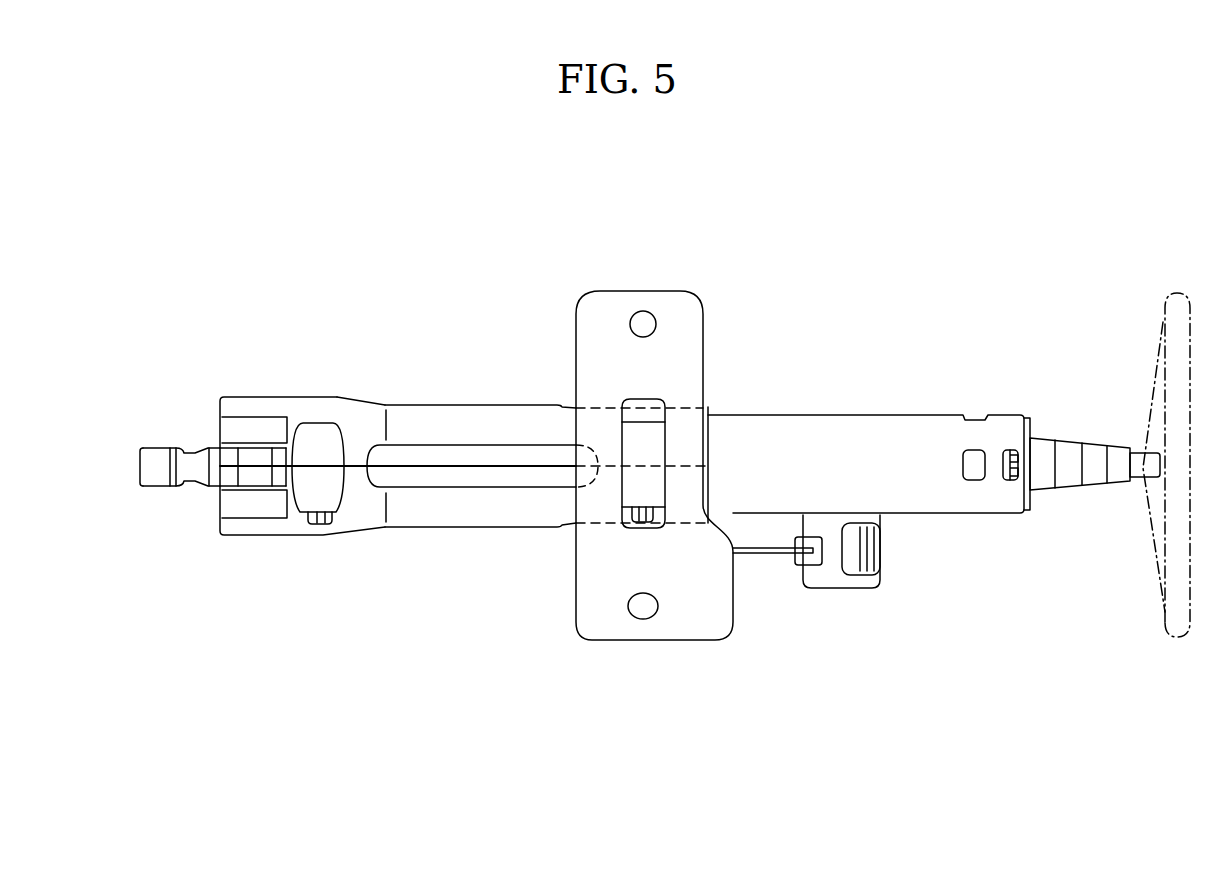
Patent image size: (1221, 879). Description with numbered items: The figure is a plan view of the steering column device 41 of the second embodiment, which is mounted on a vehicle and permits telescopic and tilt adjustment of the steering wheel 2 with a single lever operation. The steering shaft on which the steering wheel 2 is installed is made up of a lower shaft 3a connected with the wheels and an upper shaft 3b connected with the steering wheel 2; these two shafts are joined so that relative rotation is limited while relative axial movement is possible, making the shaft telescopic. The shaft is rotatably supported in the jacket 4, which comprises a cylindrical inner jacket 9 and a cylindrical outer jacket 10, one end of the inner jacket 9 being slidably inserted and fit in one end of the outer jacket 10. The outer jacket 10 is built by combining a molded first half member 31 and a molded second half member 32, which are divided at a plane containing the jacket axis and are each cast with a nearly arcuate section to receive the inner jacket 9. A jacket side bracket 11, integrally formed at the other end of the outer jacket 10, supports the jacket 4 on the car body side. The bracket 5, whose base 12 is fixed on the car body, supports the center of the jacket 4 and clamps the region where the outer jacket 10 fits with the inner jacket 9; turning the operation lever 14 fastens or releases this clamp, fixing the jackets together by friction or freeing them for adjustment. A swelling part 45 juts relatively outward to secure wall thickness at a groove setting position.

The steering wheel 2 is at (1178, 328).
The lower shaft 3a is at (155, 481).
The upper shaft 3b is at (1095, 479).
The jacket 4 is at (783, 247).
The bracket 5 is at (571, 611).
The inner jacket 9 is at (791, 442).
The outer jacket 10 is at (477, 425).
The jacket side bracket 11 is at (255, 432).
The base 12 is at (712, 622).
The operation lever 14 is at (830, 580).
The molded first half member 31 is at (365, 413).
The molded second half member 32 is at (407, 515).
The steering column device 41 is at (900, 347).
The swelling part 45 is at (480, 481).